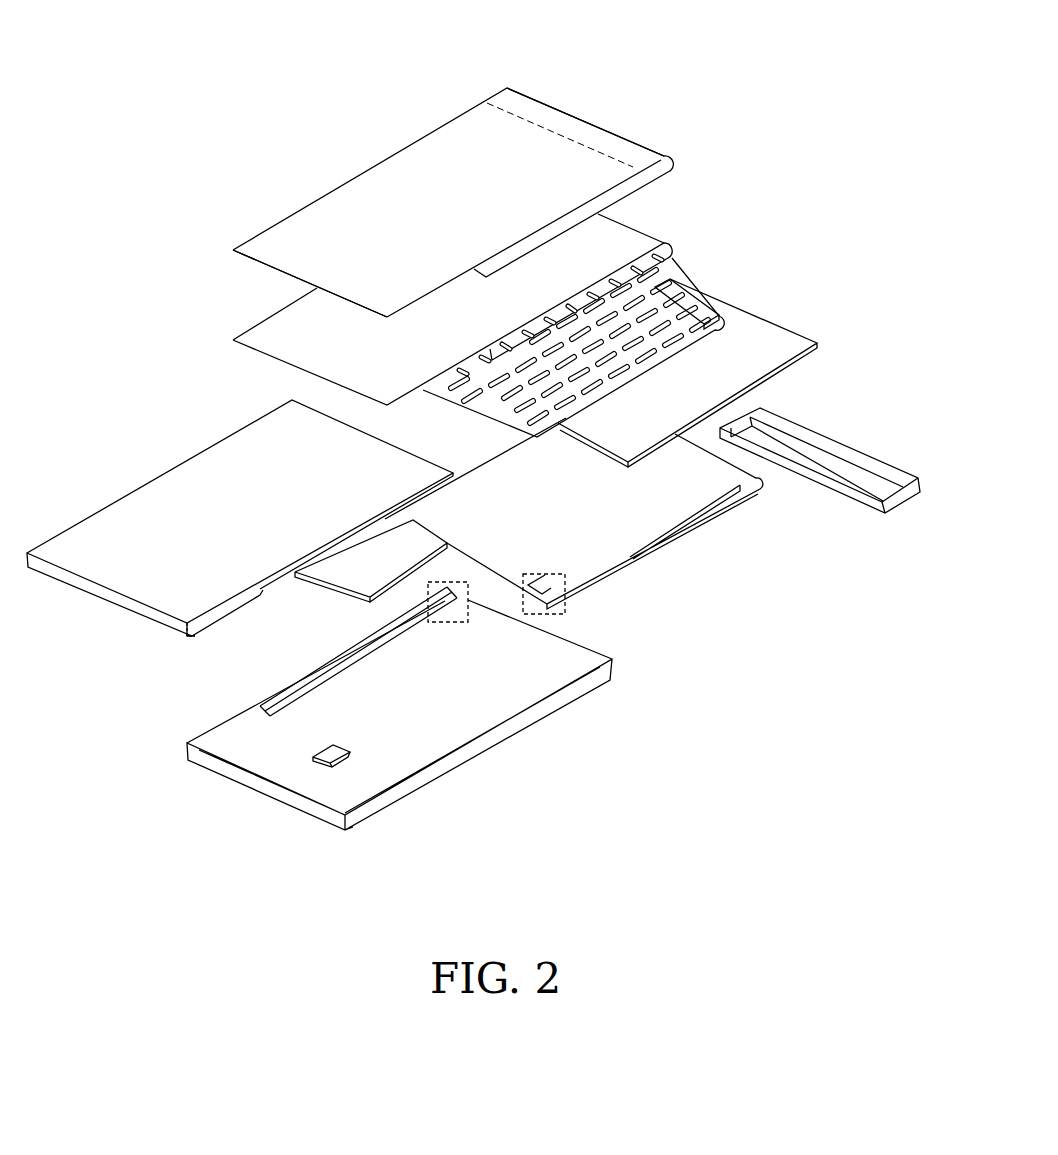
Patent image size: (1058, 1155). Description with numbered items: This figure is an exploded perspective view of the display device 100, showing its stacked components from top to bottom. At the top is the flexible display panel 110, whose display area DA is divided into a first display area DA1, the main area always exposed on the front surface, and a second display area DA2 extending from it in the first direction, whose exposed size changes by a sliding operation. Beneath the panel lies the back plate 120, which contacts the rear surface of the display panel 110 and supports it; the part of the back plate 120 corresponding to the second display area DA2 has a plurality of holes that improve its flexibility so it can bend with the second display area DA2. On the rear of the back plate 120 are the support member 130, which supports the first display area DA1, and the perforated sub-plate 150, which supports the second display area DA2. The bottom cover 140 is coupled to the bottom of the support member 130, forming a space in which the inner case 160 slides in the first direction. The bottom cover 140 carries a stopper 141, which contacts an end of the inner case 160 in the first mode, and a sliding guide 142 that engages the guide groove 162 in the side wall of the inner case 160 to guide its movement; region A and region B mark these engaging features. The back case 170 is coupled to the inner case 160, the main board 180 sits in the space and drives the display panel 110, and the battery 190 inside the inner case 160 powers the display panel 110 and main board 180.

The display device 100 is at (748, 28).
The display panel 110 is at (507, 88).
The display area DA is at (434, 33).
The first display area DA1 is at (447, 128).
The second display area DA2 is at (502, 98).
The back plate 120 is at (657, 234).
The support member 130 is at (187, 459).
The bottom cover 140 is at (268, 795).
The stopper 141 is at (330, 758).
The sliding guide 142 is at (263, 710).
The sub-plate 150 is at (690, 296).
The inner case 160 is at (689, 530).
The guide groove 162 is at (627, 555).
The back case 170 is at (832, 438).
The main board 180 is at (322, 582).
The battery 190 is at (796, 334).
The region A is at (428, 591).
The region B is at (565, 608).